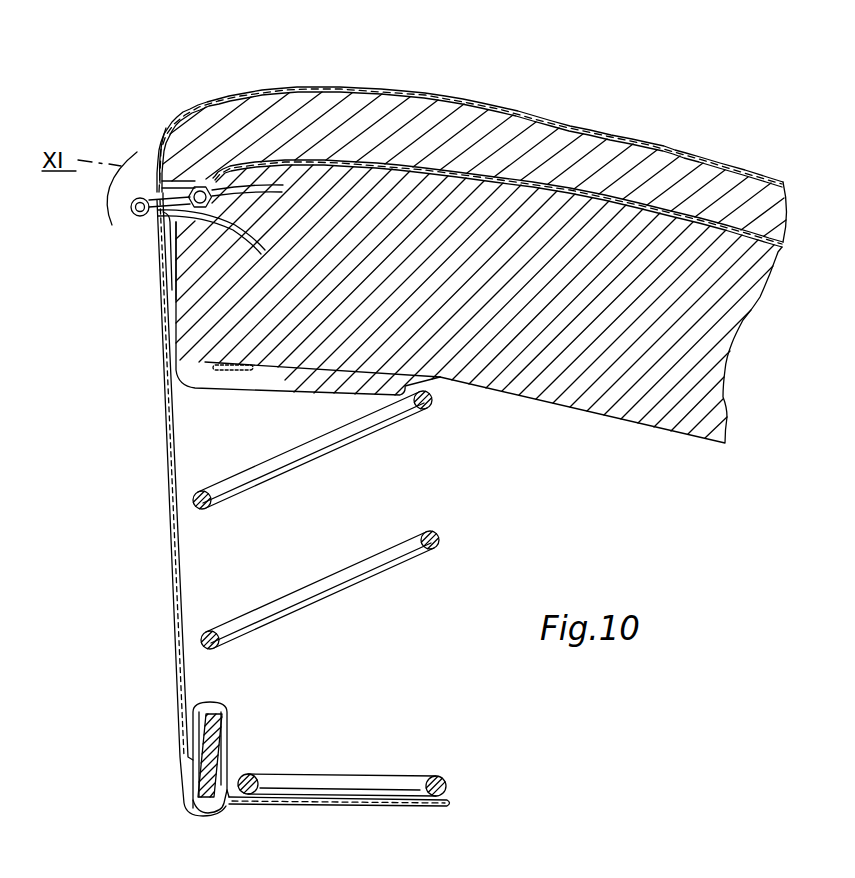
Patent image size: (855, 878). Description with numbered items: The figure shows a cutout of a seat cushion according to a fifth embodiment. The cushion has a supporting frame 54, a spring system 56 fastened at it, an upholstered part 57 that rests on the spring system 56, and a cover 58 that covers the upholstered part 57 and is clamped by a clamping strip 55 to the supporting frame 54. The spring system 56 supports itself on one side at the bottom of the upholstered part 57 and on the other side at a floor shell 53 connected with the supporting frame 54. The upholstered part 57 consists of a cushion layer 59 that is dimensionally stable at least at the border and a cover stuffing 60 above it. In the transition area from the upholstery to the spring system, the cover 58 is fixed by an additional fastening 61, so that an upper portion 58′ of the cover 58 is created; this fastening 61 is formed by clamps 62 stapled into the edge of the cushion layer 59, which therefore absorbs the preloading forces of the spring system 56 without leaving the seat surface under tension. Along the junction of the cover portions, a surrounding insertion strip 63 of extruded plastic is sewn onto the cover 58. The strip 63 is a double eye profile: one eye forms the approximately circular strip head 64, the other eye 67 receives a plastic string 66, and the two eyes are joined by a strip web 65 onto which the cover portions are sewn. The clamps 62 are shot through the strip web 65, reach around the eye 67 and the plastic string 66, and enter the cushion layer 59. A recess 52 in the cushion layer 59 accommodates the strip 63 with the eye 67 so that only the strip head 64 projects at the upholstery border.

The recess 52 is at (160, 242).
The floor shell 53 is at (353, 800).
The supporting frame 54 is at (193, 760).
The clamping strip 55 is at (218, 790).
The spring system 56 is at (326, 590).
The upholstered part 57 is at (468, 95).
The cover 58 is at (722, 163).
The upper portion of the cover 58′ is at (195, 112).
The cushion layer 59 is at (243, 310).
The cover stuffing 60 is at (607, 155).
The additional fastening 61 is at (128, 230).
The clamps 62 is at (165, 302).
The insertion strip 63 is at (124, 211).
The strip head 64 is at (129, 203).
The strip web 65 is at (232, 158).
The plastic string 66 is at (158, 263).
The eye 67 is at (204, 186).